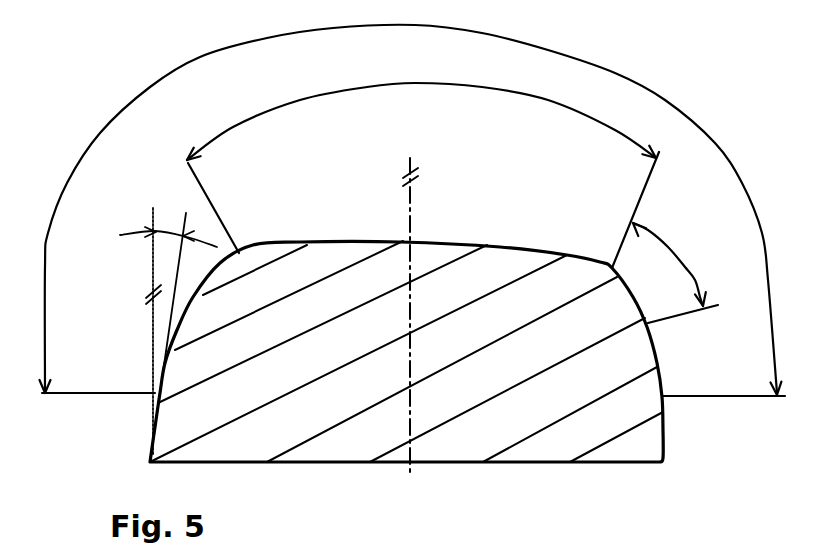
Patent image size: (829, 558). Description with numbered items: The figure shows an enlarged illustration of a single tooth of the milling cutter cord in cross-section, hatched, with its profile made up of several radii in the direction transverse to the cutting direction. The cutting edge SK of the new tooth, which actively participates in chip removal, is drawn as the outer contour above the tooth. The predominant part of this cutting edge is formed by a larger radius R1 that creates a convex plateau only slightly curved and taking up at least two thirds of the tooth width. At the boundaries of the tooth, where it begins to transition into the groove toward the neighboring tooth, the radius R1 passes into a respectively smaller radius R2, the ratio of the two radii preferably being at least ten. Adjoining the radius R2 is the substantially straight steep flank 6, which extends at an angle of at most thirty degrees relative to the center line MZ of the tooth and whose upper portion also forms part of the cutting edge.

The steep flank 6 is at (152, 431).
The cutting edge SK is at (617, 74).
The first radius of curvature R1 is at (423, 163).
The second radius of curvature R2 is at (675, 273).
The center line MZ is at (412, 202).